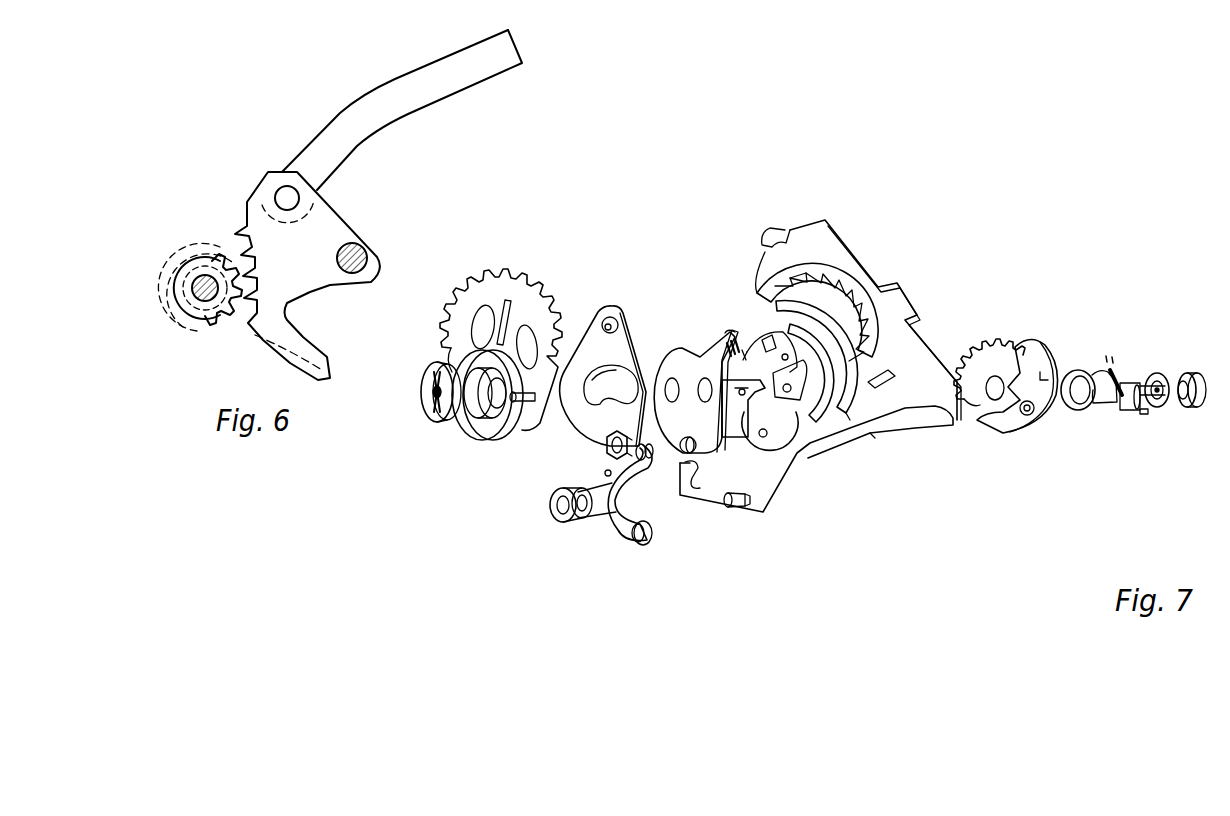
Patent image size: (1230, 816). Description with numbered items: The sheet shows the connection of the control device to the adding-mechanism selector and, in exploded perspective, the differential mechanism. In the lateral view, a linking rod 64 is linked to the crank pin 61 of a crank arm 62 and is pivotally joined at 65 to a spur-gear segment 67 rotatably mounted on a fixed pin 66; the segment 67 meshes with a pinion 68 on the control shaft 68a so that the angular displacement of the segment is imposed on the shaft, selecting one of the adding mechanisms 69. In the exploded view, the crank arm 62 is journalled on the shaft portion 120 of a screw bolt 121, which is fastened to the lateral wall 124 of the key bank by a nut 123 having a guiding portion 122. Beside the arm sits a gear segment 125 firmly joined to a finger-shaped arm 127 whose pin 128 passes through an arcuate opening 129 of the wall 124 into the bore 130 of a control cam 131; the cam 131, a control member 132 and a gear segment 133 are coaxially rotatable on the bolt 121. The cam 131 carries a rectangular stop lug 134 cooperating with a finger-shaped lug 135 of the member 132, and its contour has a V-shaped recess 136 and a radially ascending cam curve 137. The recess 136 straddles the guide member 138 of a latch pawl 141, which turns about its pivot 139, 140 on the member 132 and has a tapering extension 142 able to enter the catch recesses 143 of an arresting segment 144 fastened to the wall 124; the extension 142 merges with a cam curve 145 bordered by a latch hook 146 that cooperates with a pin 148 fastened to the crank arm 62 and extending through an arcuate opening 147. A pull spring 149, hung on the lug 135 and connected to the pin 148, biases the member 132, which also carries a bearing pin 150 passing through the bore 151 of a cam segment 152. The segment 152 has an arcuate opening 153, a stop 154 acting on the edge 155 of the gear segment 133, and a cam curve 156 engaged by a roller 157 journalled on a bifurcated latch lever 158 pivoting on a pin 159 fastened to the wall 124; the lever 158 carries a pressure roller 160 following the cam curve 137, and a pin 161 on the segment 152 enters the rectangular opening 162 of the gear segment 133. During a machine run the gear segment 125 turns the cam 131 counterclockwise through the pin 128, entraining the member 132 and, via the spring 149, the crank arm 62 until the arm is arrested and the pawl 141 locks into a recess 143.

In FIG. 6, the linking rod 64 is at (437, 100).
In FIG. 6, the pivot joint 65 is at (287, 186).
In FIG. 6, the fixed pin 66 is at (370, 257).
In FIG. 6, the spur-gear segment 67 is at (335, 288).
In FIG. 6, the pinion 68 is at (190, 328).
In FIG. 6, the control shaft 68a is at (200, 280).
In FIG. 6, the adding mechanisms 69 is at (163, 328).
In FIG. 7, the crank pin 61 is at (1146, 415).
In FIG. 7, the crank arm 62 is at (1098, 378).
In FIG. 7, the shaft portion 120 is at (1160, 375).
In FIG. 7, the screw bolt 121 is at (1195, 405).
In FIG. 7, the guiding portion 122 is at (470, 433).
In FIG. 7, the nut 123 is at (442, 425).
In FIG. 7, the lateral wall 124 is at (868, 285).
In FIG. 7, the gear segment 125 is at (990, 335).
In FIG. 7, the finger-shaped arm 127 is at (1032, 345).
In FIG. 7, the pin 128 is at (1028, 415).
In FIG. 7, the arcuate opening 129 is at (850, 415).
In FIG. 7, the bore 130 is at (786, 352).
In FIG. 7, the control cam 131 is at (790, 440).
In FIG. 7, the control member 132 is at (683, 347).
In FIG. 7, the gear segment 133 is at (523, 312).
In FIG. 7, the rectangular stop lug 134 is at (762, 345).
In FIG. 7, the finger-shaped lug 135 is at (728, 335).
In FIG. 7, the V-shaped recess 136 is at (845, 440).
In FIG. 7, the cam curve 137 is at (755, 350).
In FIG. 7, the guide member 138 is at (722, 350).
In FIG. 7, the pawl pivot 139 is at (737, 443).
In FIG. 7, the pawl pivot 140 is at (760, 470).
In FIG. 7, the latch pawl 141 is at (735, 420).
In FIG. 7, the tapering extension 142 is at (785, 384).
In FIG. 7, the catch recesses 143 is at (845, 230).
In FIG. 7, the arresting segment 144 is at (840, 295).
In FIG. 7, the cam curve 145 is at (815, 422).
In FIG. 7, the latch hook 146 is at (763, 440).
In FIG. 7, the arcuate opening 147 is at (872, 430).
In FIG. 7, the pin 148 is at (1128, 410).
In FIG. 7, the pull spring 149 is at (742, 355).
In FIG. 7, the bearing pin 150 is at (700, 480).
In FIG. 7, the bore 151 is at (613, 457).
In FIG. 7, the cam segment 152 is at (587, 405).
In FIG. 7, the arcuate opening 153 is at (580, 392).
In FIG. 7, the stop 154 is at (681, 444).
In FIG. 7, the edge 155 is at (550, 312).
In FIG. 7, the cam curve 156 is at (604, 440).
In FIG. 7, the roller 157 is at (640, 546).
In FIG. 7, the latch lever 158 is at (605, 517).
In FIG. 7, the pin 159 is at (733, 506).
In FIG. 7, the pressure roller 160 is at (642, 462).
In FIG. 7, the pin 161 is at (625, 313).
In FIG. 7, the rectangular opening 162 is at (503, 320).